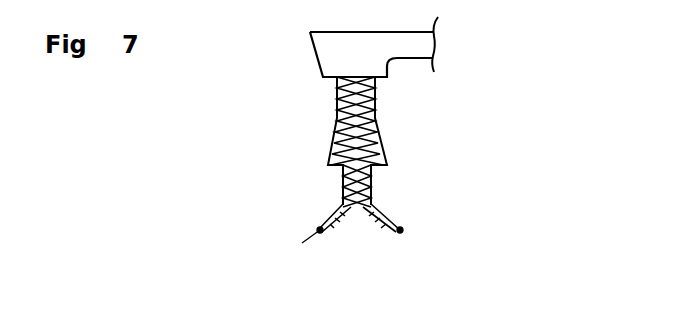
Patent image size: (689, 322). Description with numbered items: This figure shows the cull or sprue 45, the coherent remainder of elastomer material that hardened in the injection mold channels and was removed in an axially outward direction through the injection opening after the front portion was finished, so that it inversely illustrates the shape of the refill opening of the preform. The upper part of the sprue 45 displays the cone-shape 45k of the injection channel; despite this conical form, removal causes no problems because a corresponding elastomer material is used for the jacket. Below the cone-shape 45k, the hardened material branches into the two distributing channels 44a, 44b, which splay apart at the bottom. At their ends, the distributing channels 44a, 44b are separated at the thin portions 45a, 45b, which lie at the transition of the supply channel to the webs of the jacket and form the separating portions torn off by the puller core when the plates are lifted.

The cull or sprue 45 is at (314, 92).
The cone-shape of the injection channel 45k is at (376, 142).
The distributing channel 44a is at (346, 209).
The distributing channel 44b is at (448, 203).
The thin portion 45a is at (288, 261).
The thin portion 45b is at (400, 230).